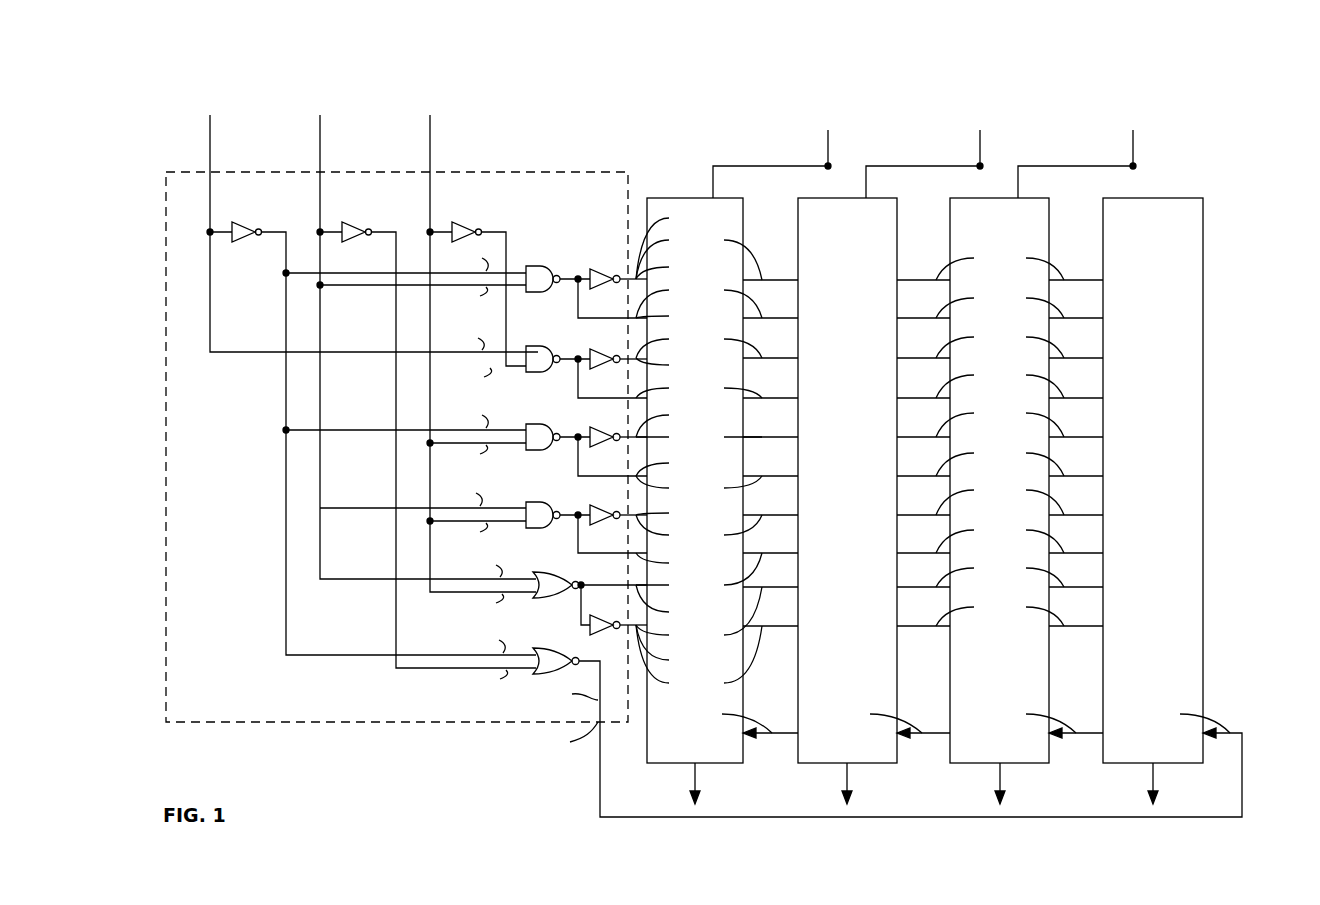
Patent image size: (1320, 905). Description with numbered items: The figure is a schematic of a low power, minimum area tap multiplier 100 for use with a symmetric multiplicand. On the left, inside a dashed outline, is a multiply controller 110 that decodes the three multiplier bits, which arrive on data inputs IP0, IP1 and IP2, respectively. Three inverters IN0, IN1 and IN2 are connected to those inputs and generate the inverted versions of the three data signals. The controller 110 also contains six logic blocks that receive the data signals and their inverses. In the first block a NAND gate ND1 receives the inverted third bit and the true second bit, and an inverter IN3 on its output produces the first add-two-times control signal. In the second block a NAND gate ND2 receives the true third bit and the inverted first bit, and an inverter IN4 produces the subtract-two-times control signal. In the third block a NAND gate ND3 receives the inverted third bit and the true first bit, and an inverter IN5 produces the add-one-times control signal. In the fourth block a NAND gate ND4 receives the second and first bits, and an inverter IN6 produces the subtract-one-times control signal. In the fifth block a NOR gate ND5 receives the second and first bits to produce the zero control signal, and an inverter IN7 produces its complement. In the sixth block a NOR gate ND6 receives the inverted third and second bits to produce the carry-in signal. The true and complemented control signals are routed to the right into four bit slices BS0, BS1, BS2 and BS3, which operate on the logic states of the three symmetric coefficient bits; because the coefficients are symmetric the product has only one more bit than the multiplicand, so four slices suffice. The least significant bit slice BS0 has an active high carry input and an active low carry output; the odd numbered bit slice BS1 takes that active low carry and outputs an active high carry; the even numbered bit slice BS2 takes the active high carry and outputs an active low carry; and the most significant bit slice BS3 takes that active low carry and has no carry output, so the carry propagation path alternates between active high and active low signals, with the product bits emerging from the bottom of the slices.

The tap multiplier 100 is at (1040, 76).
The multiply controller 110 is at (563, 172).
The data input IP2 is at (212, 170).
The data input IP1 is at (322, 170).
The data input IP0 is at (432, 170).
The inverter IN0 is at (466, 223).
The inverter IN1 is at (356, 223).
The inverter IN2 is at (246, 223).
The inverter IN3 is at (597, 269).
The inverter IN4 is at (597, 349).
The inverter IN5 is at (598, 427).
The inverter IN6 is at (598, 505).
The inverter IN7 is at (595, 636).
The NAND gate ND1 is at (534, 266).
The NAND gate ND2 is at (534, 346).
The NAND gate ND3 is at (536, 424).
The NAND gate ND4 is at (536, 502).
The NOR gate ND5 is at (539, 572).
The NOR gate ND6 is at (539, 648).
The most significant bit slice BS3 is at (704, 501).
The even numbered bit slice BS2 is at (856, 501).
The odd numbered bit slice BS1 is at (1006, 501).
The least significant bit slice BS0 is at (1162, 501).